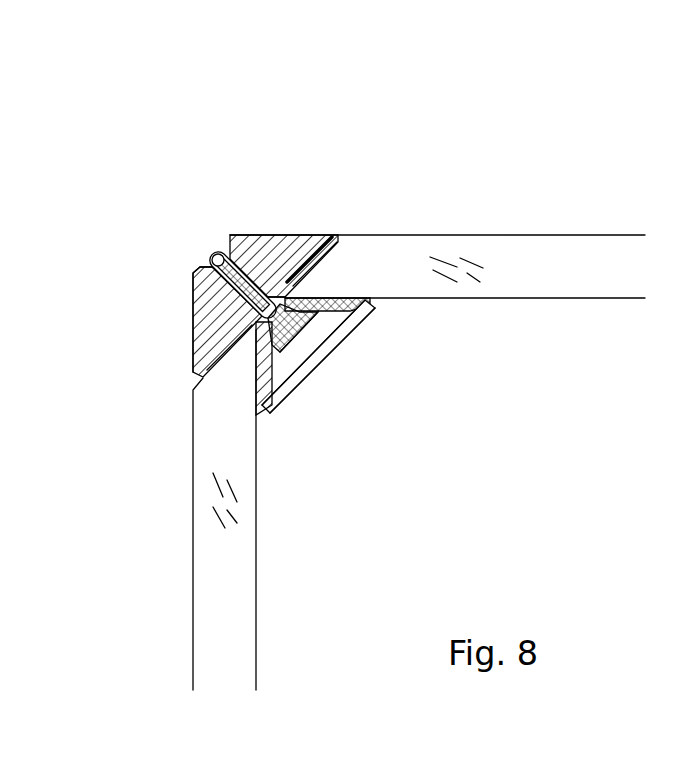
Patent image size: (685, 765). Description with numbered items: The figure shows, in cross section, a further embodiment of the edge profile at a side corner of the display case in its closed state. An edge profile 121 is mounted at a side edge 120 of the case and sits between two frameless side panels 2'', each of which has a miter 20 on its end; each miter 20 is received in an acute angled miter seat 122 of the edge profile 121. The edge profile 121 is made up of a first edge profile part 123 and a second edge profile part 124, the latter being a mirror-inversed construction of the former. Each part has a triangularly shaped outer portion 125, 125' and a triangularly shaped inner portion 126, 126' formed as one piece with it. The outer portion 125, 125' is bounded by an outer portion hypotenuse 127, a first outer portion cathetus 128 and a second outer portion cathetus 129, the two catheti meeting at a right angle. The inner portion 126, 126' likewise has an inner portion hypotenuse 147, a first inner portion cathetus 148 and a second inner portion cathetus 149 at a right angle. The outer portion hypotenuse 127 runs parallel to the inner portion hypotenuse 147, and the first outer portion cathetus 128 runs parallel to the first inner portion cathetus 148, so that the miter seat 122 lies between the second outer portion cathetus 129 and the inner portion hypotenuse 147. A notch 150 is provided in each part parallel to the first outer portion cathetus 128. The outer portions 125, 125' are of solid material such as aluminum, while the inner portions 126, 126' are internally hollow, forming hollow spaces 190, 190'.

The side panel 2'' is at (384, 425).
The miter 20 is at (296, 282).
The side edge 120 is at (210, 208).
The edge profile 121 is at (265, 219).
The acute angled miter seat 122 is at (296, 285).
The first edge profile part 123 is at (181, 285).
The second edge profile part 124 is at (290, 221).
The triangularly shaped outer portion 125 is at (180, 322).
The triangularly shaped outer portion 125' is at (335, 194).
The triangularly shaped inner portion 126 is at (313, 417).
The triangularly shaped inner portion 126' is at (386, 356).
The outer portion hypotenuse 127 is at (243, 240).
The first outer portion cathetus 128 is at (213, 256).
The second outer portion cathetus 129 is at (320, 274).
The inner portion hypotenuse 147 is at (318, 310).
The first inner portion cathetus 148 is at (298, 318).
The second inner portion cathetus 149 is at (326, 322).
The notch 150 is at (219, 236).
The hollow space 190 is at (286, 473).
The hollow space 190' is at (462, 365).